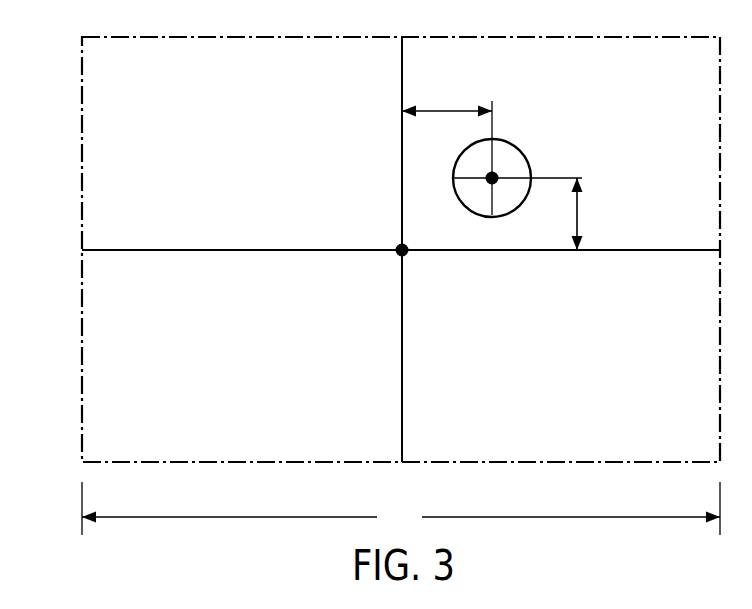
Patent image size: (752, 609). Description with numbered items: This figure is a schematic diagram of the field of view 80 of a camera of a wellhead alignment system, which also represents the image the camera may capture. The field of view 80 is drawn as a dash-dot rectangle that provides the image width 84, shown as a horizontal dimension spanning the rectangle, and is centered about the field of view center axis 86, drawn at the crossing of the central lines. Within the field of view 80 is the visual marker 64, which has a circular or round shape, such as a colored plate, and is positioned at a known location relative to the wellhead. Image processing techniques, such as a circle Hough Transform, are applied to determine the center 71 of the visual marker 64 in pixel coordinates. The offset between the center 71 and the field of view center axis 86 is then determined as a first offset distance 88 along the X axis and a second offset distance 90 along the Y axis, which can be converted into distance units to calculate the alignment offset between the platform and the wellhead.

The field of view 80 is at (63, 106).
The image width 84 is at (401, 508).
The field of view center axis 86 is at (401, 248).
The visual marker 64 is at (509, 140).
The center 71 is at (490, 176).
The first offset distance 88 is at (447, 110).
The second offset distance 90 is at (577, 215).